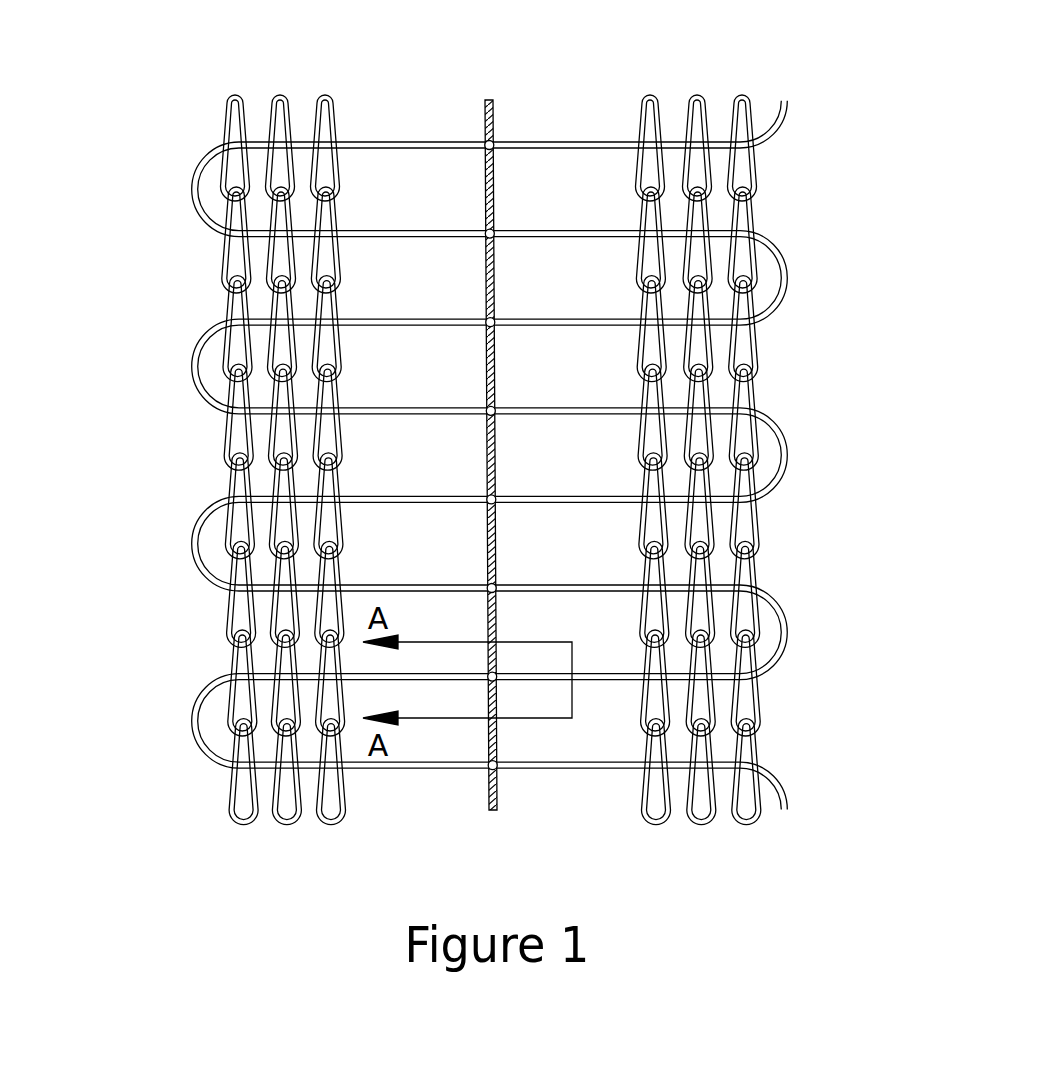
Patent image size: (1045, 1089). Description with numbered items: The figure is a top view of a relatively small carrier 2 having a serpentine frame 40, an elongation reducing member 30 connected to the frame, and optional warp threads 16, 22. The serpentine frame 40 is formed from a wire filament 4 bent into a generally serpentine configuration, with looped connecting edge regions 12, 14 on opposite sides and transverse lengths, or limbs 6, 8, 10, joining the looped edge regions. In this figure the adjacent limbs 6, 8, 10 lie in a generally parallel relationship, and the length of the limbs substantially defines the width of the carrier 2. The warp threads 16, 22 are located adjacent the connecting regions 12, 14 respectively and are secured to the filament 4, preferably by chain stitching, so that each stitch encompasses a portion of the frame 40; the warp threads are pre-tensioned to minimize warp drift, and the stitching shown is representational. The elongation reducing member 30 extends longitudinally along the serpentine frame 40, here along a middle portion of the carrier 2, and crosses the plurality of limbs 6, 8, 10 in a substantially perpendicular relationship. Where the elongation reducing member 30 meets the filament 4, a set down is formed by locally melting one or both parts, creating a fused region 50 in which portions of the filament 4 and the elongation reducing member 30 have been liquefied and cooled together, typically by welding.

The carrier 2 is at (175, 124).
The filament 4 is at (377, 142).
The limb 6 is at (612, 583).
The limb 8 is at (611, 496).
The limb 10 is at (611, 408).
The looped connecting edge region 12 is at (196, 370).
The looped connecting edge region 14 is at (790, 456).
The warp thread 16 is at (332, 827).
The warp thread 22 is at (747, 823).
The elongation reducing member 30 is at (490, 120).
The serpentine frame 40 is at (792, 217).
The fused region 50 is at (493, 230).